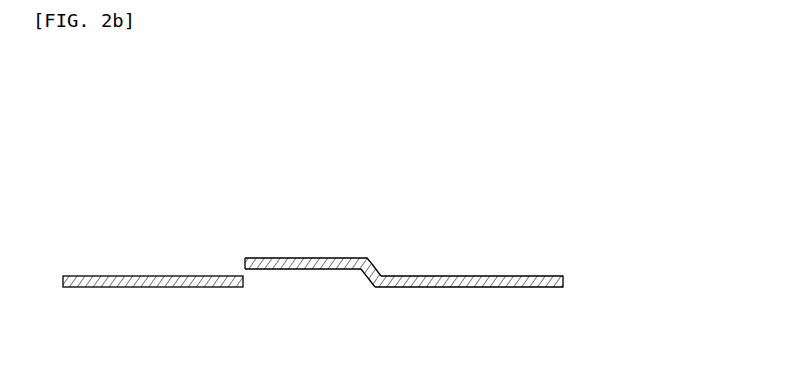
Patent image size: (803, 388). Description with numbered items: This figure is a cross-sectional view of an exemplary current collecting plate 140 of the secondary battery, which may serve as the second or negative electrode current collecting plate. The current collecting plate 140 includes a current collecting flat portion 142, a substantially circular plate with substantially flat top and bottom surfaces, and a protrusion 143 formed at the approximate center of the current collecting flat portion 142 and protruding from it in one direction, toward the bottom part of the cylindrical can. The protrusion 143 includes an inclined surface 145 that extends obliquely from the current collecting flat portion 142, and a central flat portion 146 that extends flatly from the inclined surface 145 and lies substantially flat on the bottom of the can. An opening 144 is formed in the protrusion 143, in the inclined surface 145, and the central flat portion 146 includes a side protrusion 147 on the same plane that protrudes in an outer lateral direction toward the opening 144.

The current collecting plate 140 is at (541, 223).
The current collecting flat portion 142 is at (500, 289).
The protrusion 143 is at (371, 250).
The opening 144 is at (251, 278).
The inclined surface 145 is at (386, 265).
The central flat portion 146 is at (296, 257).
The side protrusion 147 is at (245, 262).